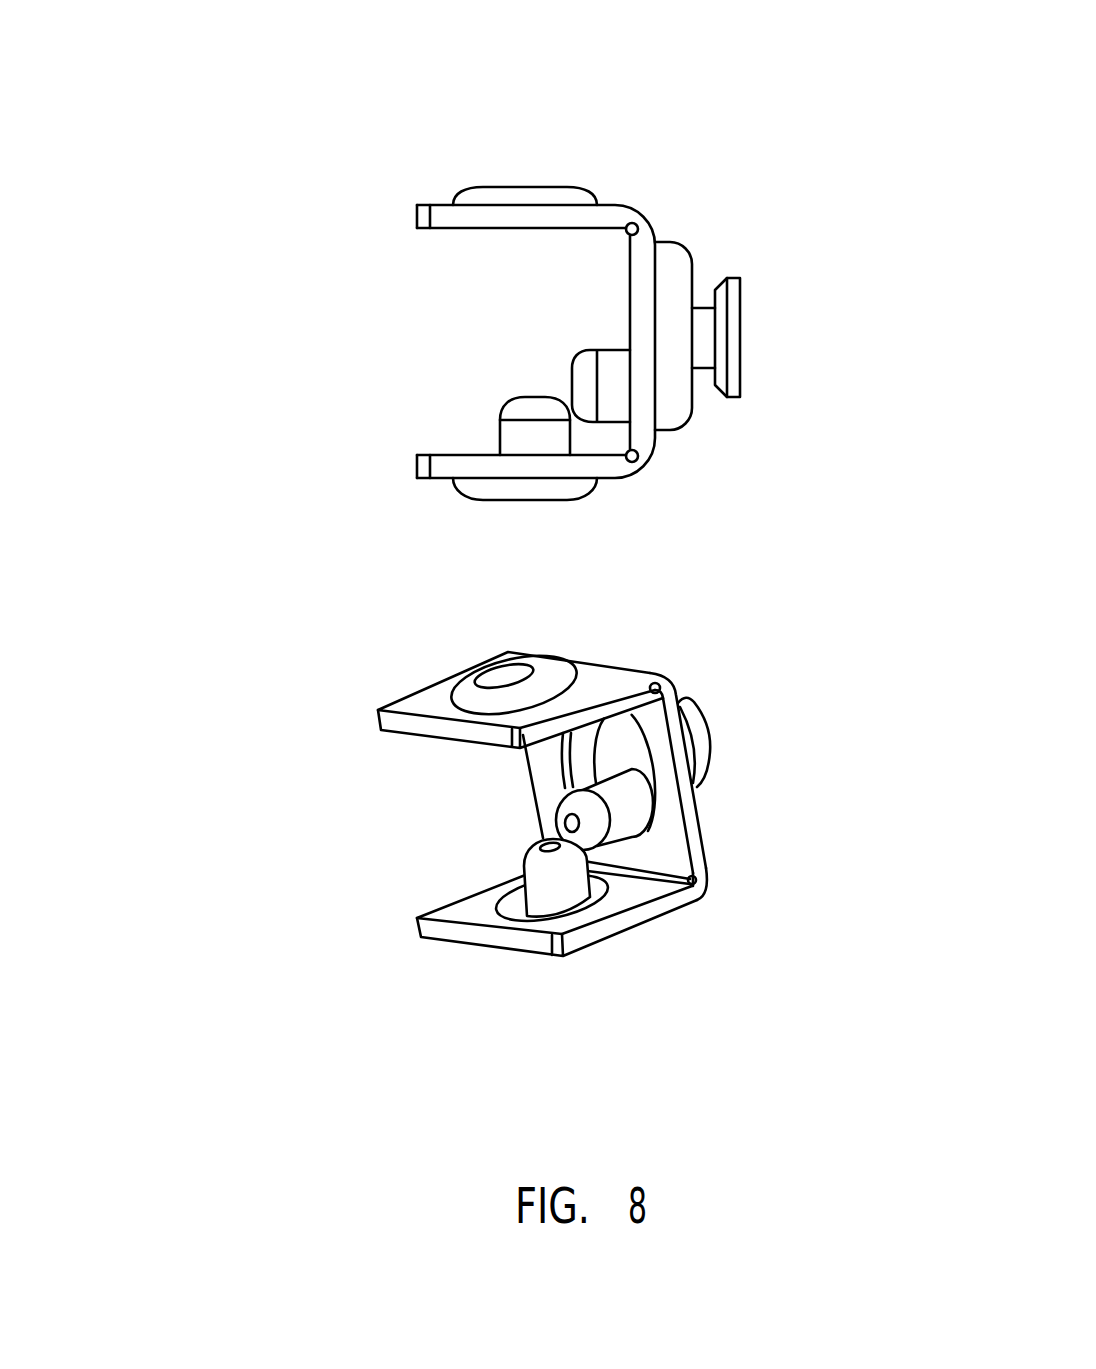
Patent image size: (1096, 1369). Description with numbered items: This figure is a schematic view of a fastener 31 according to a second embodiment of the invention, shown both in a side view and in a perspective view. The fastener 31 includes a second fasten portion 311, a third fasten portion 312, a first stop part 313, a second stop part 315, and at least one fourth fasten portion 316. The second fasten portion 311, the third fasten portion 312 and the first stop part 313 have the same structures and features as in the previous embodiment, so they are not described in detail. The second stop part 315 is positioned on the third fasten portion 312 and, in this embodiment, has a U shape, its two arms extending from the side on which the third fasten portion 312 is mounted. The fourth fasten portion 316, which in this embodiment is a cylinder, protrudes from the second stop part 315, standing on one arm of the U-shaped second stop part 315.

The fastener 31 is at (105, 123).
The second fasten portion 311 is at (597, 350).
The third fasten portion 312 is at (700, 320).
The first stop part 313 is at (737, 328).
The second stop part 315 is at (645, 403).
The fourth fasten portion 316 is at (538, 408).